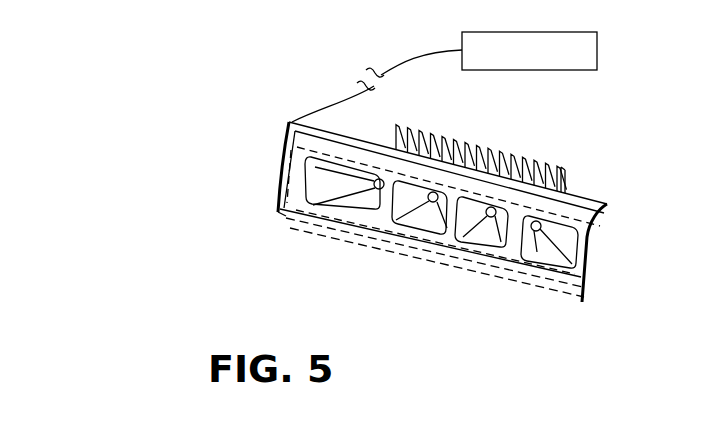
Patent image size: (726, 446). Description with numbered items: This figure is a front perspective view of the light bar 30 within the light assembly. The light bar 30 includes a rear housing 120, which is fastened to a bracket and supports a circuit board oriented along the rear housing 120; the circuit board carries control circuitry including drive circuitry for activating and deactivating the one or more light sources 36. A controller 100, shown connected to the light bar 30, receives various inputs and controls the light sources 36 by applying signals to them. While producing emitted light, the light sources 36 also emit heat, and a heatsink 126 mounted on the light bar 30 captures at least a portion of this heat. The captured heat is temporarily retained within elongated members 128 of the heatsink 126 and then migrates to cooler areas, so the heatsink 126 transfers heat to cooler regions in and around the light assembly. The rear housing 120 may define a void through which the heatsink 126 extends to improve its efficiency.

The light bar 30 is at (586, 131).
The light sources 36 is at (429, 204).
The controller 100 is at (598, 50).
The rear housing 120 is at (580, 203).
The heatsink 126 is at (485, 141).
The elongated members 128 is at (565, 181).